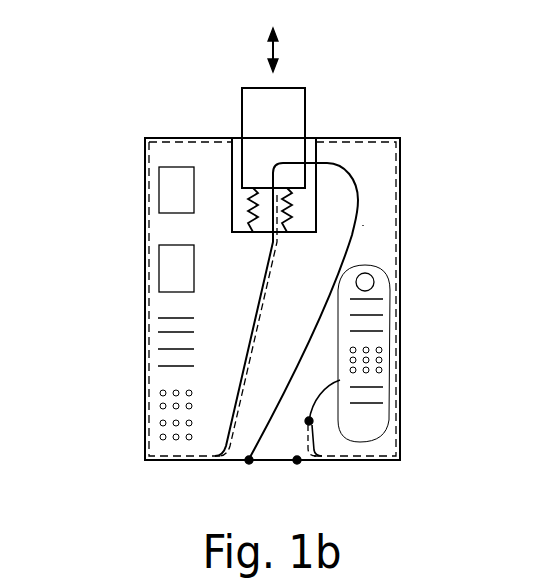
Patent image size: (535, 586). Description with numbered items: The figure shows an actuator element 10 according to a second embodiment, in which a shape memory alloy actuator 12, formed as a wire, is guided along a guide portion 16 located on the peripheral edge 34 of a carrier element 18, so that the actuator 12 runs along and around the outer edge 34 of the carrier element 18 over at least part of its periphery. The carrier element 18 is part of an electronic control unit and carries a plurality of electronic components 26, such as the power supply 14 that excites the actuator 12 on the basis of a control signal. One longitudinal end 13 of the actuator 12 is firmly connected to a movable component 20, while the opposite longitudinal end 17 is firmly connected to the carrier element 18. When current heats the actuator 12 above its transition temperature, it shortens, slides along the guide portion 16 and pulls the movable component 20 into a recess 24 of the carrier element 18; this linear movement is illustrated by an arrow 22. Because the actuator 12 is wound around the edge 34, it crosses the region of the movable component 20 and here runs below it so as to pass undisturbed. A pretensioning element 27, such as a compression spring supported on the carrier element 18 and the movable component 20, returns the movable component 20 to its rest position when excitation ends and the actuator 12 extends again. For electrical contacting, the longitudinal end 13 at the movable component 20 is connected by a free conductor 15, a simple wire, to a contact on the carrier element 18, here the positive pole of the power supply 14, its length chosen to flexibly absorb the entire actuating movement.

The actuator element 10 is at (404, 91).
The actuator 12 is at (400, 440).
The longitudinal end 13 is at (268, 180).
The power supply 14 is at (316, 488).
The free conductor 15 is at (327, 160).
The guide portion 16 is at (283, 246).
The longitudinal end 17 is at (313, 422).
The carrier element 18 is at (363, 225).
The movable component 20 is at (292, 100).
The arrow 22 is at (268, 50).
The recess 24 is at (237, 173).
The electronic components 26 is at (372, 283).
The pretensioning element 27 is at (288, 197).
The edge 34 is at (140, 442).